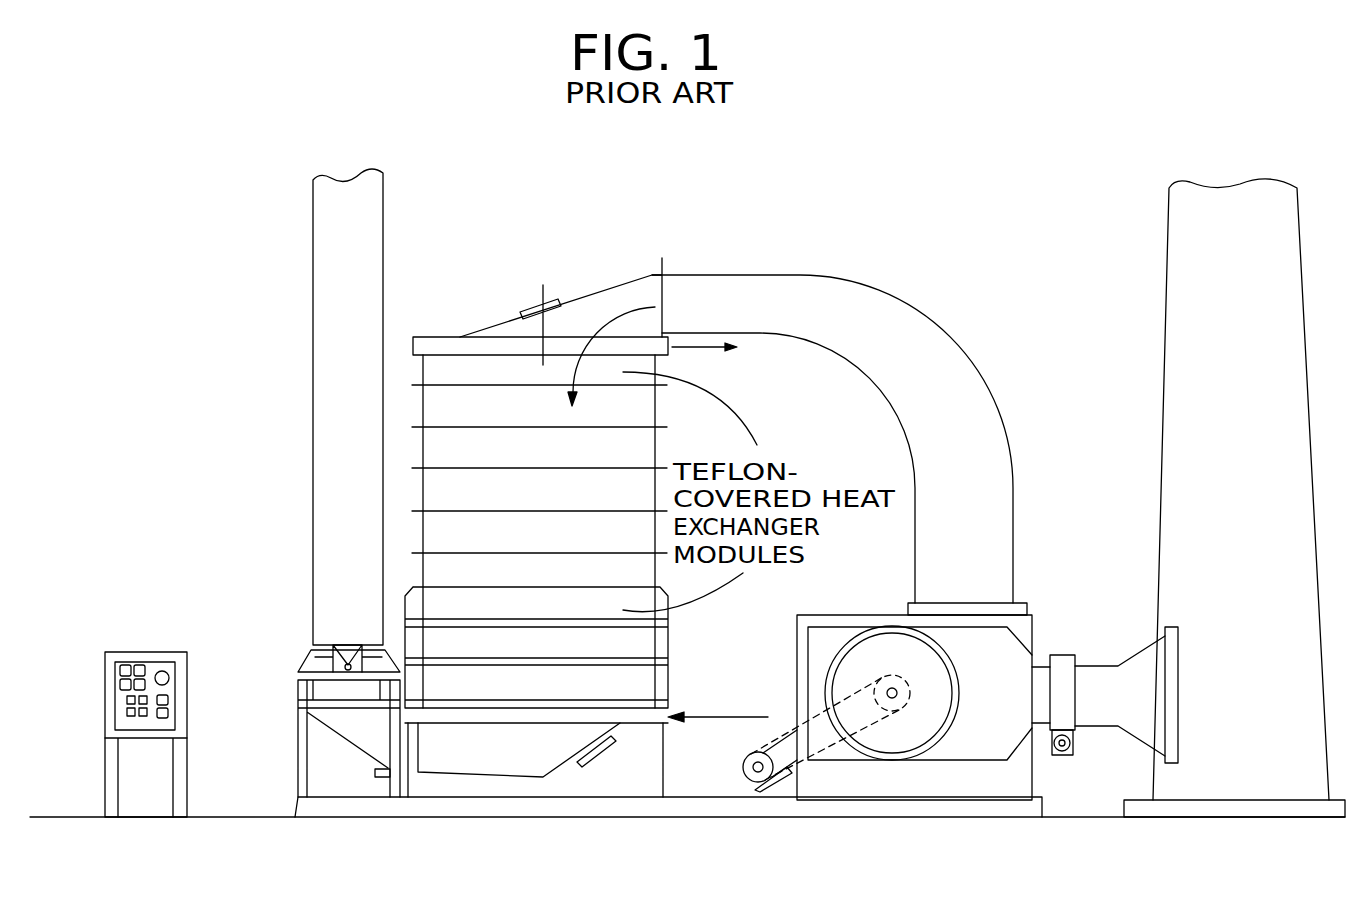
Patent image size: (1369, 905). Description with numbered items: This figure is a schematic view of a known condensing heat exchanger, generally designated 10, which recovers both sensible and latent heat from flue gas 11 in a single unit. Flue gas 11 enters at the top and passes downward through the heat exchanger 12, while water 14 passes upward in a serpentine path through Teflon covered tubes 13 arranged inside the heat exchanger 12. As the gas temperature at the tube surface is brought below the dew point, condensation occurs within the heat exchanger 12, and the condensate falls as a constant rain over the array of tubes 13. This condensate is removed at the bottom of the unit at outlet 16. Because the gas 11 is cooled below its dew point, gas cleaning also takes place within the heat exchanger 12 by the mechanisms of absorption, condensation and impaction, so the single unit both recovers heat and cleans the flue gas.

The condensing heat exchanger 10 is at (715, 236).
The flue gas 11 is at (611, 324).
The heat exchanger 12 is at (625, 480).
The Teflon covered tubes 13 is at (630, 427).
The water 14 is at (713, 717).
The outlet 16 is at (383, 785).